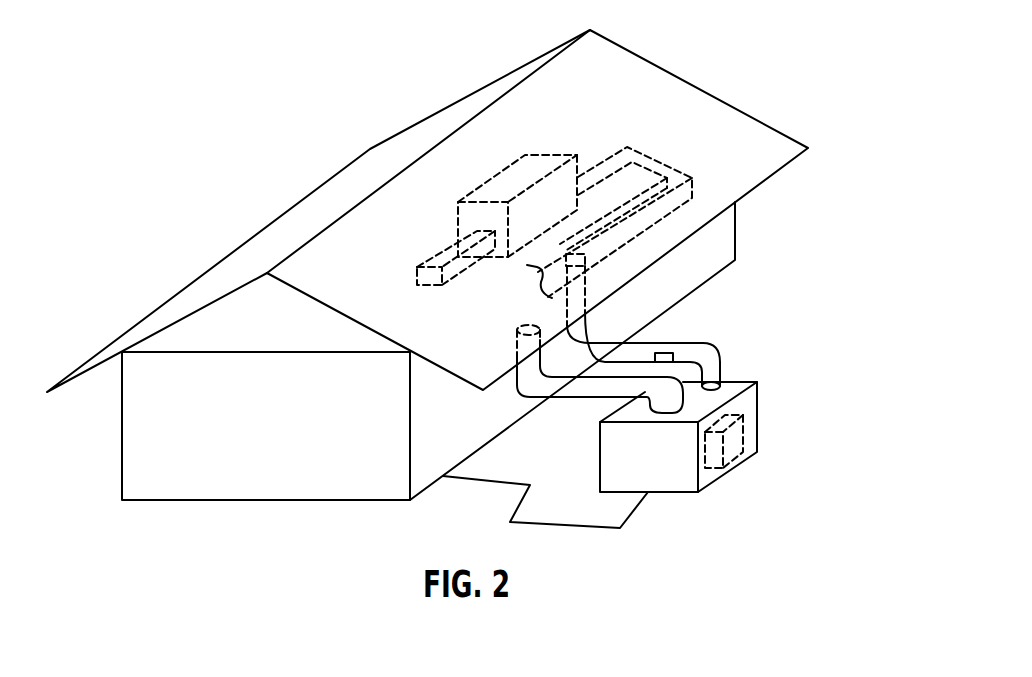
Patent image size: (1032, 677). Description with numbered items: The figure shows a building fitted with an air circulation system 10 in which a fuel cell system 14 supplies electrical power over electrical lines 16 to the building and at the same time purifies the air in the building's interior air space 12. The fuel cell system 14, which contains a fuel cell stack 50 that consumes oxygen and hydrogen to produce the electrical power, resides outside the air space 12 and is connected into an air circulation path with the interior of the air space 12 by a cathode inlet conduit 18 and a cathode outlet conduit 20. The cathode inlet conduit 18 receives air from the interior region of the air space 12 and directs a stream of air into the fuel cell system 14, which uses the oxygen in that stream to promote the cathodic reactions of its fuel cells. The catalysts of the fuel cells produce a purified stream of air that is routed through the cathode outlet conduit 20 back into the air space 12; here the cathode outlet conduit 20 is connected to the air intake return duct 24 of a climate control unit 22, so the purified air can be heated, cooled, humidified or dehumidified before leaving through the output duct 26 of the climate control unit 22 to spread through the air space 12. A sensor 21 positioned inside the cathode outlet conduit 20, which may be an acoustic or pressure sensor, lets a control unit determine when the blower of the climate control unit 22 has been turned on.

The air circulation system 10 is at (872, 126).
The air space 12 is at (707, 92).
The fuel cell system 14 is at (757, 422).
The electrical lines 16 is at (588, 528).
The cathode inlet conduit 18 is at (592, 397).
The cathode outlet conduit 20 is at (687, 342).
The sensor 21 is at (673, 357).
The climate control unit 22 is at (509, 170).
The air intake return duct 24 is at (690, 213).
The output duct 26 is at (440, 258).
The fuel cell stack 50 is at (732, 455).